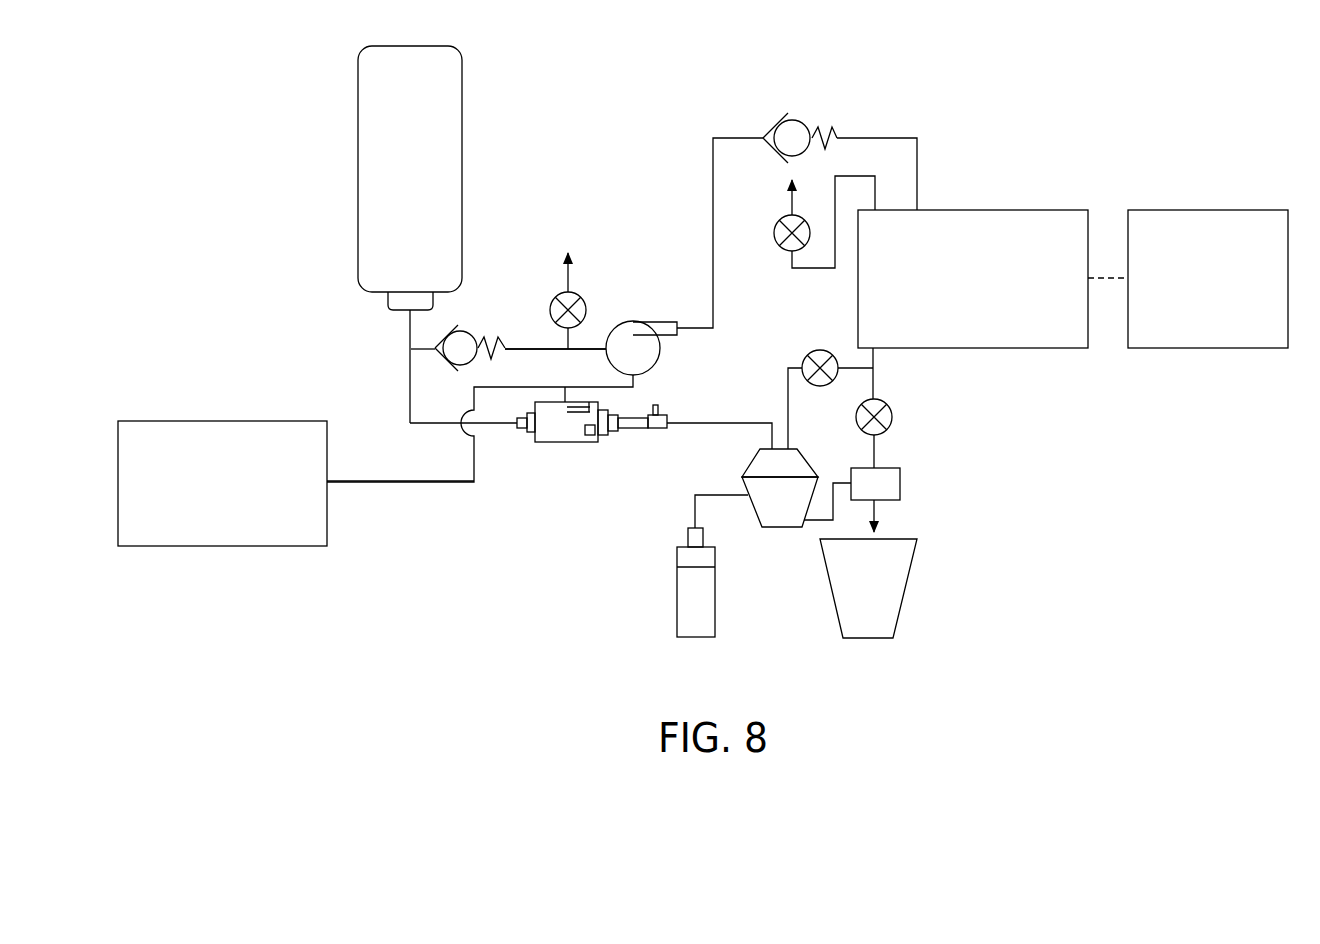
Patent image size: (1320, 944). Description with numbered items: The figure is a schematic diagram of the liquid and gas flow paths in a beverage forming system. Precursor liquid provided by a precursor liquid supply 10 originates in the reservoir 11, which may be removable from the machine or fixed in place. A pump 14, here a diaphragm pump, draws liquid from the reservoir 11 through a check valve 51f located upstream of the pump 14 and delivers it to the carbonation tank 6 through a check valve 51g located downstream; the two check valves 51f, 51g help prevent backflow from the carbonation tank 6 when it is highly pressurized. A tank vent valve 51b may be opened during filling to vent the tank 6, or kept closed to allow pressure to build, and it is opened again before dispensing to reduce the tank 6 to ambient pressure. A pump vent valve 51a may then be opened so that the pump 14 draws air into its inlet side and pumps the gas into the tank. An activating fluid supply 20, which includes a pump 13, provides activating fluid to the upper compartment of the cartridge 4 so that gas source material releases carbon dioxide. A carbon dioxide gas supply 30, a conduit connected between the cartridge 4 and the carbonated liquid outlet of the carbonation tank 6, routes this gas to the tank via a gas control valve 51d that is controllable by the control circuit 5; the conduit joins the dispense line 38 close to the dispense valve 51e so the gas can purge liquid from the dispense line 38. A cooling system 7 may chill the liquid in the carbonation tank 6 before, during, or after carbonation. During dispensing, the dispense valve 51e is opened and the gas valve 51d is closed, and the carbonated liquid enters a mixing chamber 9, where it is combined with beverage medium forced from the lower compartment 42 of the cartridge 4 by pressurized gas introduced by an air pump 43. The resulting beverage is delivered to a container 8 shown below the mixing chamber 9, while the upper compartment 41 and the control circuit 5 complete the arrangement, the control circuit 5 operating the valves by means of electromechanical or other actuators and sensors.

The cartridge 4 is at (773, 546).
The control circuit 5 is at (222, 420).
The carbonation tank 6 is at (1008, 208).
The cooling system 7 is at (1202, 208).
The collection container 8 is at (930, 598).
The mixing chamber 9 is at (900, 486).
The precursor liquid supply 10 is at (585, 230).
The reservoir 11 is at (357, 183).
The pump 13 is at (612, 447).
The pump 14 is at (648, 300).
The activating fluid supply 20 is at (498, 463).
The carbon dioxide gas supply 30 is at (758, 371).
The dispense line 38 is at (877, 380).
The separator upper portion 41 is at (762, 466).
The lower compartment 42 is at (777, 517).
The air pump 43 is at (660, 588).
The pump vent valve 51a is at (552, 304).
The tank vent valve 51b is at (774, 232).
The gas control valve 51d is at (815, 351).
The dispense valve 51e is at (892, 420).
The check valve 51f is at (463, 370).
The check valve 51g is at (784, 121).